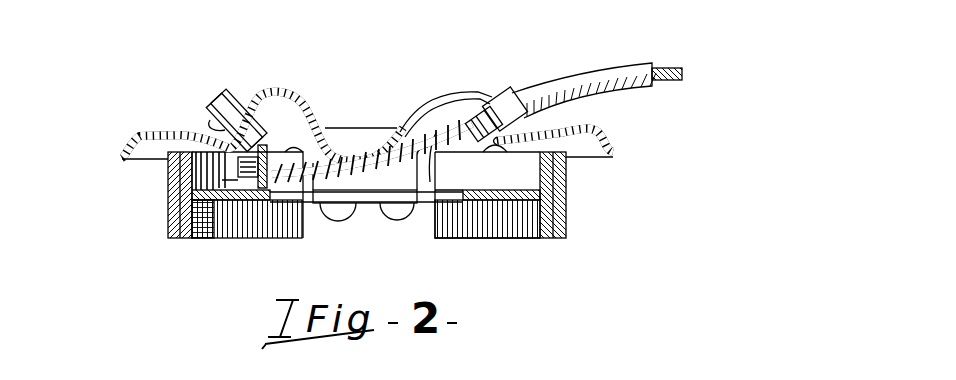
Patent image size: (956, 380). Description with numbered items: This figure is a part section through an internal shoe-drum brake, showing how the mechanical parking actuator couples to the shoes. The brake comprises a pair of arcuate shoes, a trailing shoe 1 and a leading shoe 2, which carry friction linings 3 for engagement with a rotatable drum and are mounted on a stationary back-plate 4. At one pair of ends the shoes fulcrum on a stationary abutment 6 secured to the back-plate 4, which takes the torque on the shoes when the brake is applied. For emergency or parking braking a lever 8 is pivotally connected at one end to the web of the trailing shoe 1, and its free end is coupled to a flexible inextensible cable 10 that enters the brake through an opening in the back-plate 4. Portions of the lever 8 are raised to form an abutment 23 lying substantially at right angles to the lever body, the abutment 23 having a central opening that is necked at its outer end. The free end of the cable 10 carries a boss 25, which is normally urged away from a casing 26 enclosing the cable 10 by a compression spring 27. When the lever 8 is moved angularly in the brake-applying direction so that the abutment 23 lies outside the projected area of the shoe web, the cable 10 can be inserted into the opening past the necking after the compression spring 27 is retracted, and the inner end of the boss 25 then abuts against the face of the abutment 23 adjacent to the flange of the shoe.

The trailing shoe 1 is at (218, 230).
The leading shoe 2 is at (489, 220).
The friction linings 3 is at (180, 208).
The back-plate 4 is at (419, 121).
The stationary abutment 6 is at (372, 194).
The lever 8 is at (238, 190).
The flexible inextensible cable 10 is at (668, 67).
The abutment 23 is at (273, 147).
The boss 25 is at (243, 160).
The casing 26 is at (572, 83).
The compression spring 27 is at (461, 127).